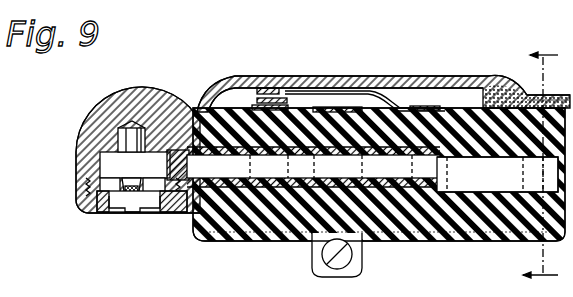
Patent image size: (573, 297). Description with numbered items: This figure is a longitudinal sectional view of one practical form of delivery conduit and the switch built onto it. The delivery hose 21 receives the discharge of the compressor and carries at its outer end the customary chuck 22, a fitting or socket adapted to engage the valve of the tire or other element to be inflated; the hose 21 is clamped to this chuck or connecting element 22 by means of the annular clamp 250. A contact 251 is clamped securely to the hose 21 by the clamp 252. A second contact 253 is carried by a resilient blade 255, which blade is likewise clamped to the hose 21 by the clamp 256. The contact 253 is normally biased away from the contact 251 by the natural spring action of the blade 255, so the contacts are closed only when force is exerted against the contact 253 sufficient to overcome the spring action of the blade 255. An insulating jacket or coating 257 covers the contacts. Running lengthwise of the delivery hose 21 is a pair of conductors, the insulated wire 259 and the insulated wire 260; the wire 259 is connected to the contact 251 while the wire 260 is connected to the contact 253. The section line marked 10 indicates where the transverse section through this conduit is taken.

The section line 10 is at (544, 167).
The delivery hose 21 is at (229, 112).
The chuck 22 is at (145, 100).
The annular clamp 250 is at (312, 250).
The contact 251 is at (303, 106).
The clamp 252 is at (223, 228).
The second contact 253 is at (268, 90).
The resilient blade 255 is at (391, 88).
The clamp 256 is at (413, 242).
The insulating jacket 257 is at (440, 82).
The insulated wire 259 is at (324, 87).
The insulated wire 260 is at (496, 106).